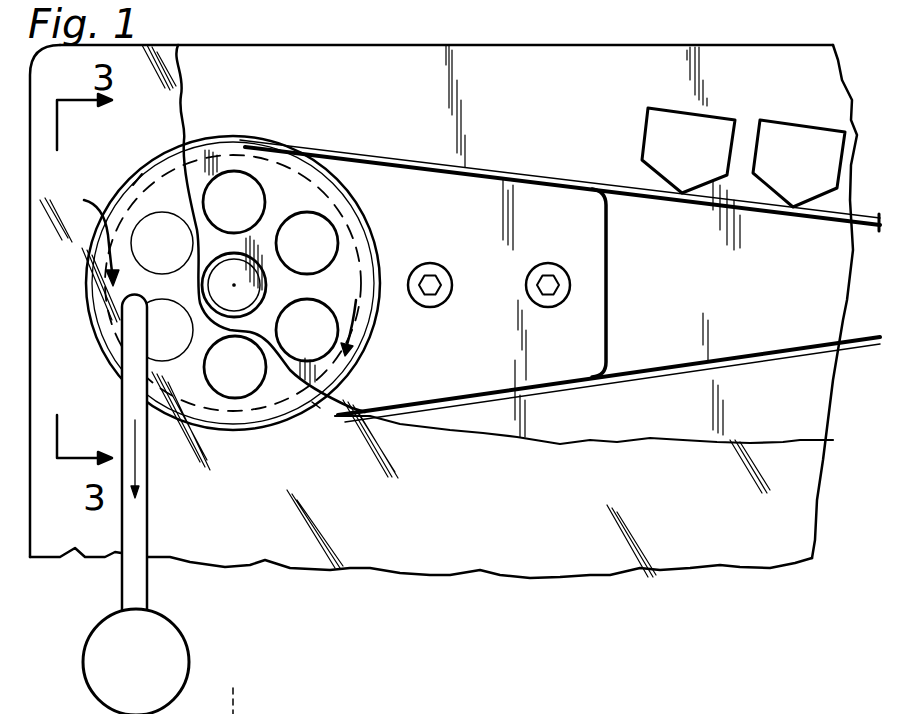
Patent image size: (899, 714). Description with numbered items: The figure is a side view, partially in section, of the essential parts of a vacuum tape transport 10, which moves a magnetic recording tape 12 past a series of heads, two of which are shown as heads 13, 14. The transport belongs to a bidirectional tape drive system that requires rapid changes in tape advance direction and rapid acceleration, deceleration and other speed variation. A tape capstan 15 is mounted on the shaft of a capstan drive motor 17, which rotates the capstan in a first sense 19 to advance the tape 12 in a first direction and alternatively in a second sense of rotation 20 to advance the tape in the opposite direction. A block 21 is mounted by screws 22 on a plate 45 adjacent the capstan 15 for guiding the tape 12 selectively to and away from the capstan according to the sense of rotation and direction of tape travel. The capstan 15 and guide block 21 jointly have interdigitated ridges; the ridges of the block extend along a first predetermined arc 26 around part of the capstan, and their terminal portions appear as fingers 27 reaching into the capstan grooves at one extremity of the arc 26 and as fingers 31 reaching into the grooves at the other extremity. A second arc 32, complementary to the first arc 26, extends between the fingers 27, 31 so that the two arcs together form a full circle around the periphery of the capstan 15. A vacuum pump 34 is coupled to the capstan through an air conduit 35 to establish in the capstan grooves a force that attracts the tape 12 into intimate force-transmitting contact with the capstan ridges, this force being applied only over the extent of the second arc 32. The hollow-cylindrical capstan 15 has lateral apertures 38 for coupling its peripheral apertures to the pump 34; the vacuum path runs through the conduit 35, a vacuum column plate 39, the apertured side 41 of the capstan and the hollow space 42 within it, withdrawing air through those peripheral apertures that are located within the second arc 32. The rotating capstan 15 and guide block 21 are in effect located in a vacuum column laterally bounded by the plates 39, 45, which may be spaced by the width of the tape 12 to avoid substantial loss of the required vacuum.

The tape transport 10 is at (780, 297).
The tape 12 is at (765, 352).
The head 13 is at (700, 160).
The head 14 is at (810, 182).
The tape capstan 15 is at (302, 199).
The capstan drive motor 17 is at (351, 708).
The first sense of rotation 19 is at (89, 237).
The sense of rotation 20 is at (358, 344).
The block 21 is at (595, 258).
The screws 22 is at (526, 280).
The first predetermined arc 26 is at (358, 312).
The fingers 27 is at (298, 152).
The fingers 31 is at (316, 403).
The second arc 32 is at (137, 180).
The vacuum pump 34 is at (177, 624).
The air conduit 35 is at (145, 523).
The lateral apertures 38 is at (243, 178).
The vacuum column plate 39 is at (196, 92).
The apertured side 41 is at (362, 302).
The hollow space 42 is at (340, 247).
The plate 45 is at (306, 46).